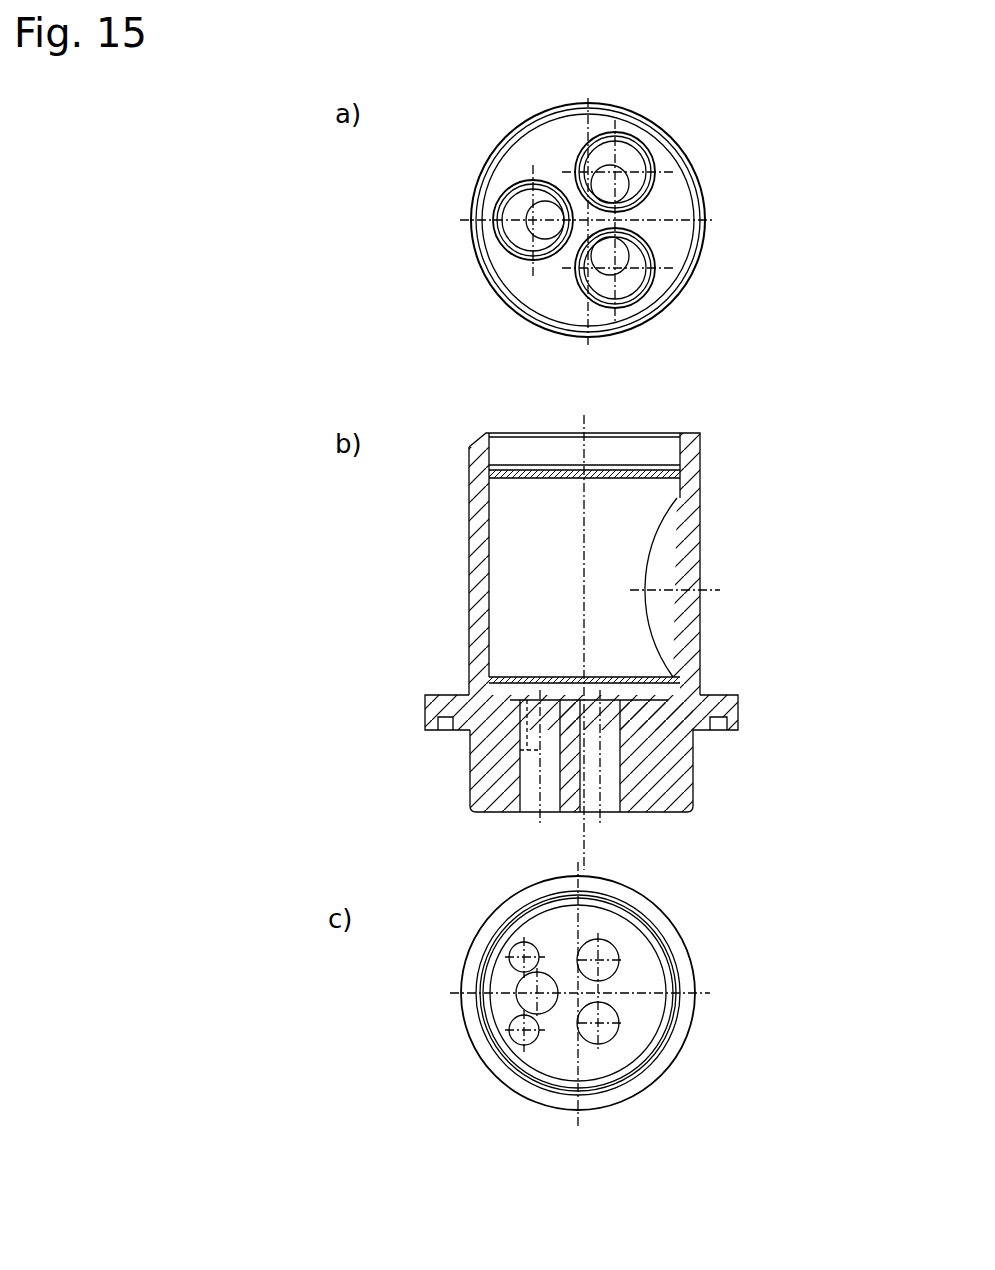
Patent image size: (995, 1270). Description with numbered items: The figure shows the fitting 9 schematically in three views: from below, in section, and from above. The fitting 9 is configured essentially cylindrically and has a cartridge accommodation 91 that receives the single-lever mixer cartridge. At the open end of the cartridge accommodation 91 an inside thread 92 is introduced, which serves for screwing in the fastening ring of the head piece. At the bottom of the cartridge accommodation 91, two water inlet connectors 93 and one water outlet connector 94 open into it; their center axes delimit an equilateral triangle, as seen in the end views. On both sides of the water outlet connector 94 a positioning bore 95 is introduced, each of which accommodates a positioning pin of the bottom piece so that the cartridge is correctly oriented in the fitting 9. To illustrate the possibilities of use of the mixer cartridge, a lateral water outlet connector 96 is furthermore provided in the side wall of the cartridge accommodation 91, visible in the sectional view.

The fitting 9 is at (777, 152).
The cartridge accommodation 91 is at (498, 592).
The inside thread 92 is at (486, 456).
The water inlet connector 93 is at (630, 158).
The water outlet connector 94 is at (518, 233).
The positioning bore 95 is at (480, 742).
The lateral water outlet connector 96 is at (673, 565).